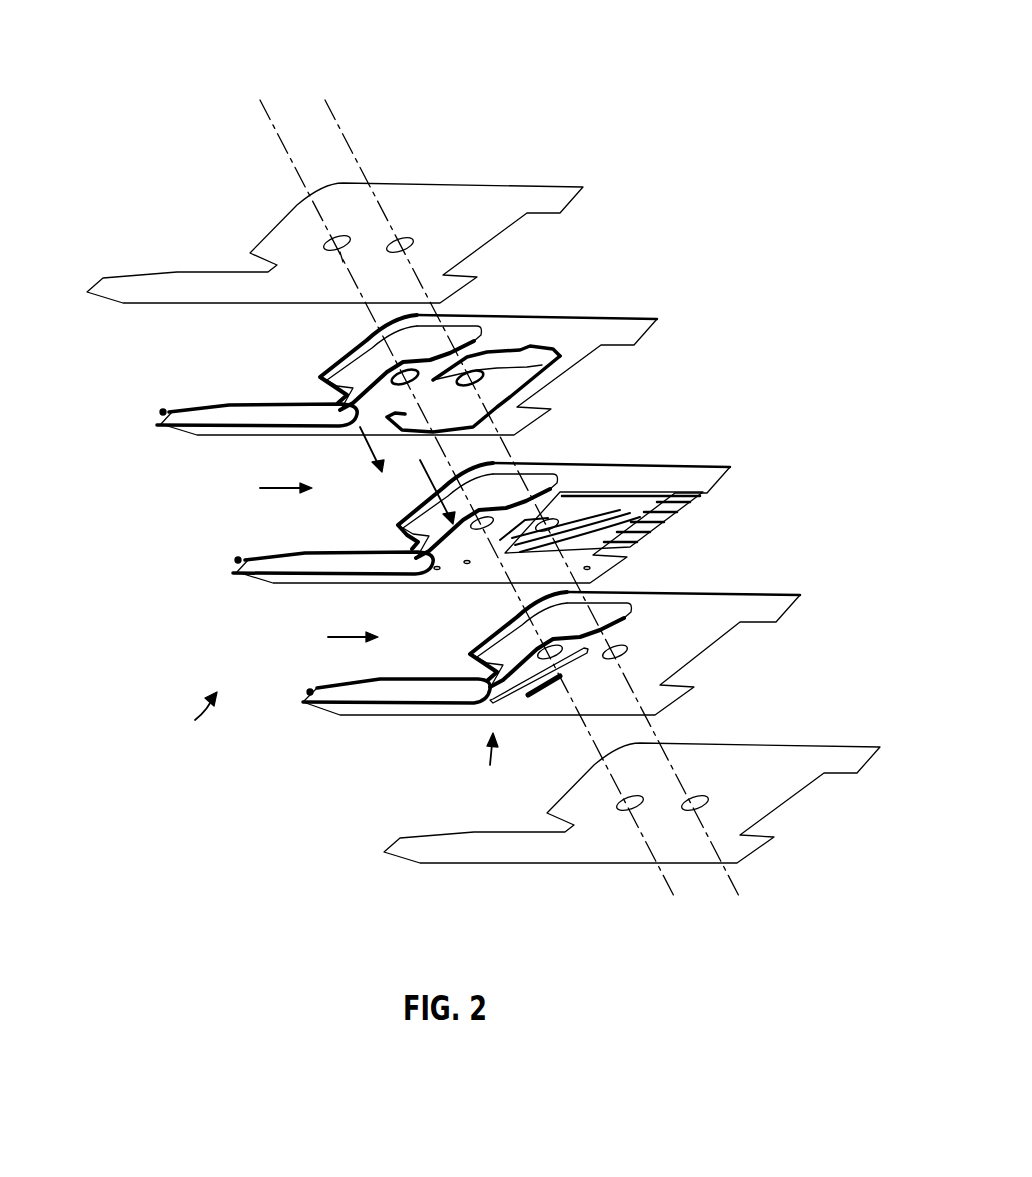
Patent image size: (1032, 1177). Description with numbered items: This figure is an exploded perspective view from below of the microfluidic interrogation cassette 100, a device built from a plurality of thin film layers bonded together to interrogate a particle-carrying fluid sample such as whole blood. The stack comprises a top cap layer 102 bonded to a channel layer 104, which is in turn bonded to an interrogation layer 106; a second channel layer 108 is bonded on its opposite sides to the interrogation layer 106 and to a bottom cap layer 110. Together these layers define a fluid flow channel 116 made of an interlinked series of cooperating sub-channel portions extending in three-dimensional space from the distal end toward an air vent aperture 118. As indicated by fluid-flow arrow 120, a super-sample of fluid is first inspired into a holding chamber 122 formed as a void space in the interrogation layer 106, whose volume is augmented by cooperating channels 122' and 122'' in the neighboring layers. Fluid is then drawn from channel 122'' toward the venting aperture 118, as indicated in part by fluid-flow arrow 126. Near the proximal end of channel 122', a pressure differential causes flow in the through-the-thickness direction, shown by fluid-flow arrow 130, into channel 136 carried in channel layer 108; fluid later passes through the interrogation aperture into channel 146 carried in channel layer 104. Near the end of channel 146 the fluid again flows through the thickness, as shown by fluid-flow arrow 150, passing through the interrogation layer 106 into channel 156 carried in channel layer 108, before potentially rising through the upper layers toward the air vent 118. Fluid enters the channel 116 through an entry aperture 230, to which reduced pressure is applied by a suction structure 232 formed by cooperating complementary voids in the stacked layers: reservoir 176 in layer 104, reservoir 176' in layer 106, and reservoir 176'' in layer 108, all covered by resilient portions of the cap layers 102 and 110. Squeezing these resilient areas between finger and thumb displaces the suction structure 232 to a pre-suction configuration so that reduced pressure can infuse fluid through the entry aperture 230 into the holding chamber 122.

The microfluidic interrogation cassette 100 is at (634, 90).
The top cap layer 102 is at (510, 193).
The channel layer 104 is at (625, 323).
The interrogation layer 106 is at (687, 470).
The channel layer 108 is at (755, 603).
The bottom cap layer 110 is at (773, 750).
The fluid flow channel 116 is at (195, 720).
The air vent aperture 118 is at (340, 270).
The fluid-flow arrow 120 is at (328, 637).
The holding chamber 122 is at (333, 538).
The cooperating channel 122' is at (257, 389).
The cooperating channel 122'' is at (396, 665).
The fluid-flow arrow 126 is at (260, 488).
The fluid-flow arrow 130 is at (367, 438).
The channel 136 is at (577, 660).
The channel 146 is at (527, 358).
The fluid-flow arrow 150 is at (425, 478).
The channel 156 is at (547, 687).
The reservoir 176 is at (442, 341).
The reservoir 176' is at (520, 489).
The reservoir 176'' is at (596, 618).
The entry aperture 230 is at (163, 412).
The suction structure 232 is at (490, 765).